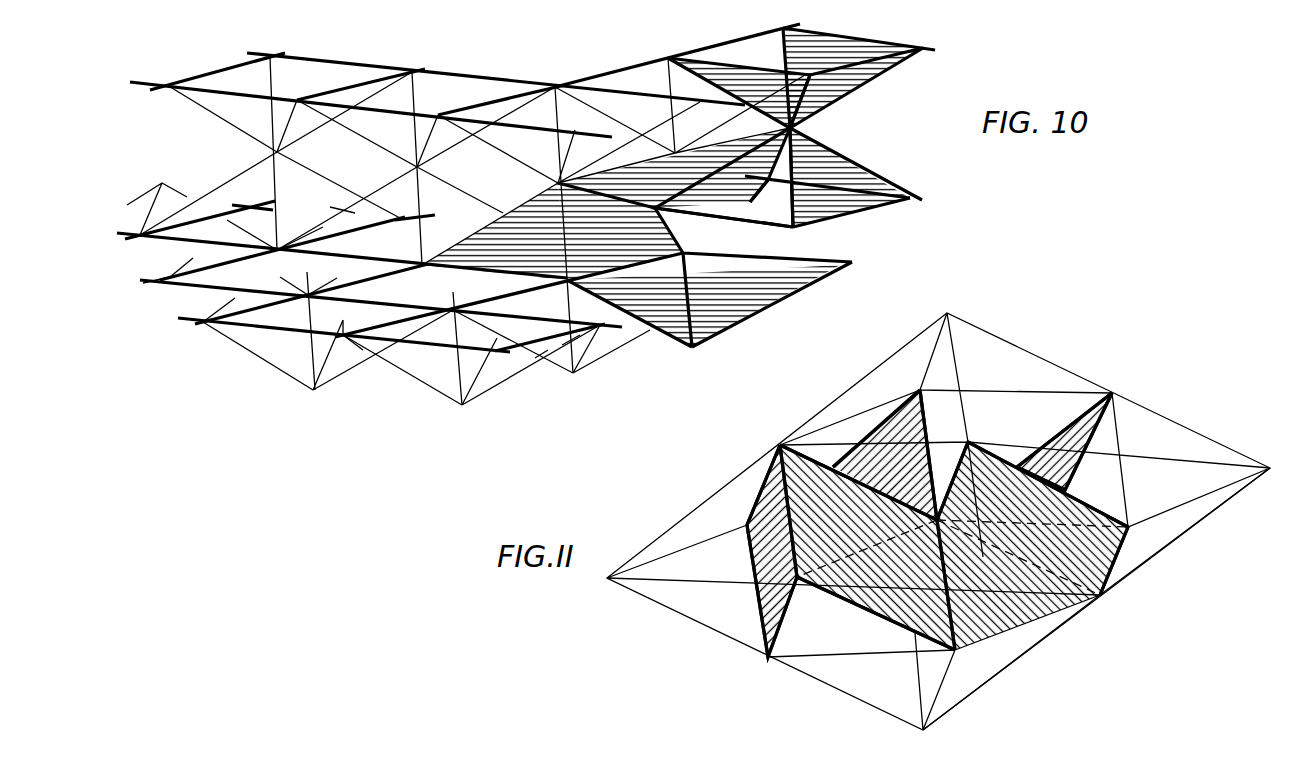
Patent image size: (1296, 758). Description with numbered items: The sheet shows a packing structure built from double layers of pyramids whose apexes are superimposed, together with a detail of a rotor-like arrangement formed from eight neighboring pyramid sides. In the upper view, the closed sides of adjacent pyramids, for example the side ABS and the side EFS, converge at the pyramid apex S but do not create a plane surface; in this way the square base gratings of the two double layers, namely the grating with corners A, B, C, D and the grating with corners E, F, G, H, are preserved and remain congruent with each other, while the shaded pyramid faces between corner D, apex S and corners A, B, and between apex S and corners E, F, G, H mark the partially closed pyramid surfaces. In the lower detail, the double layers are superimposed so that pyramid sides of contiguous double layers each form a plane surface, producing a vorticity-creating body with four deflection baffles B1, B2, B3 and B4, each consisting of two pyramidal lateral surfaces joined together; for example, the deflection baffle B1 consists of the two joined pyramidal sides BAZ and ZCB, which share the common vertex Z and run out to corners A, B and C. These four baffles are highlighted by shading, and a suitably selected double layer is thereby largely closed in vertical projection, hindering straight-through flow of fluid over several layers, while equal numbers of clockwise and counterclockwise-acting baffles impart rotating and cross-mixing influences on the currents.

In FIG. 10, the corner point of pyramid base grating A is at (776, 30).
In FIG. 11, the corner point of pyramid base grating A is at (780, 445).
In FIG. 10, the corner point of pyramid base grating B is at (930, 50).
In FIG. 11, the corner point of pyramid base grating B is at (767, 616).
In FIG. 10, the corner point of pyramid base grating C is at (828, 87).
In FIG. 11, the corner point of pyramid base grating C is at (957, 655).
In FIG. 10, the corner point of pyramid base grating D is at (660, 54).
In FIG. 10, the pyramid apex S is at (793, 173).
In FIG. 10, the corner point of pyramid base grating G is at (655, 206).
In FIG. 10, the corner point of pyramid base grating H is at (770, 182).
In FIG. 10, the corner point of pyramid base grating E is at (912, 200).
In FIG. 10, the corner point of pyramid base grating F is at (793, 229).
In FIG. 11, the common vertex of joined pyramidal sides Z is at (938, 498).
In FIG. 11, the deflection baffle B1 is at (890, 608).
In FIG. 11, the deflection baffle B2 is at (888, 423).
In FIG. 11, the deflection baffle B3 is at (1082, 436).
In FIG. 11, the deflection baffle B4 is at (1060, 508).